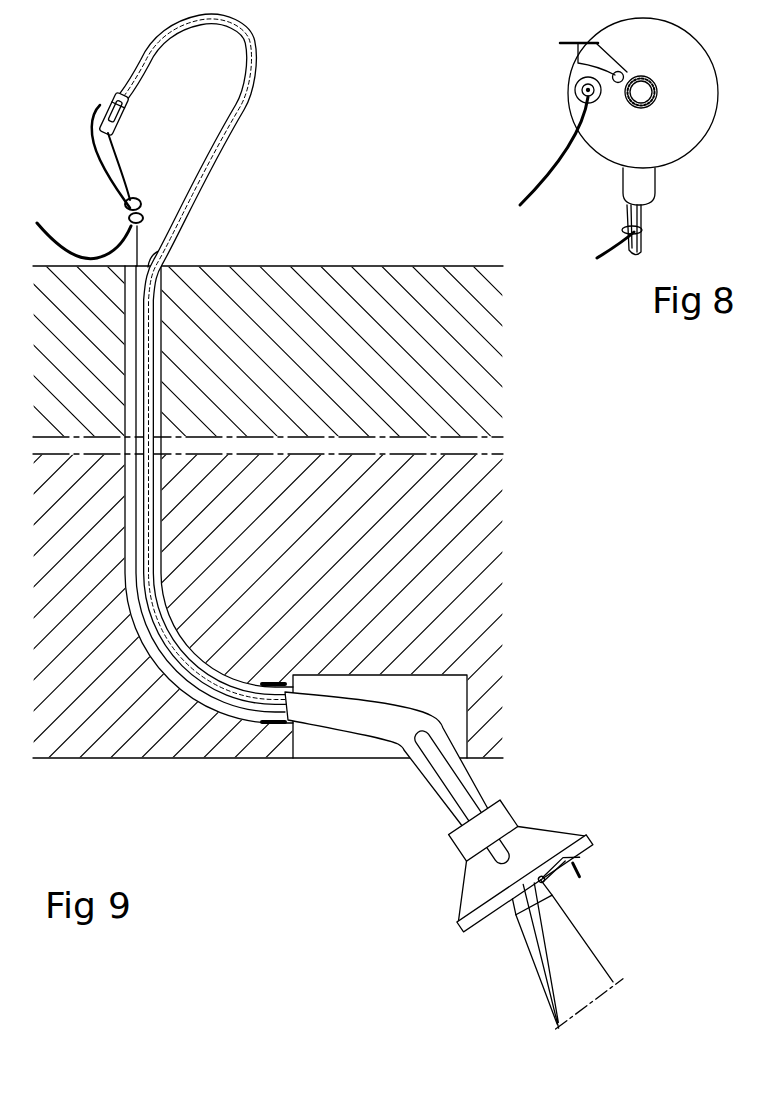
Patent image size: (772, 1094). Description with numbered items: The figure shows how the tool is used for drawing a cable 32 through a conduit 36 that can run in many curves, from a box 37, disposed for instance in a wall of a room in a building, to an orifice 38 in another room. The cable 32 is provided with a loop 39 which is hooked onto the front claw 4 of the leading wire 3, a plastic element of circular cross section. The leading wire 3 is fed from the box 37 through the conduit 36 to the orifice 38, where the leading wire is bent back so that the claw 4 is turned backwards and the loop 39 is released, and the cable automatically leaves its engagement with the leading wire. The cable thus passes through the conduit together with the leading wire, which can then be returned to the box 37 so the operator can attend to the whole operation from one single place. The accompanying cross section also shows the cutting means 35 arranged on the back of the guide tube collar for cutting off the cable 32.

In FIG. 9, the leading wire 3 is at (243, 41).
In FIG. 9, the claw 4 is at (112, 100).
In FIG. 9, the cable 32 is at (227, 717).
In FIG. 8, the cutting means 35 is at (603, 59).
In FIG. 9, the conduit 36 is at (157, 510).
In FIG. 9, the box 37 is at (308, 742).
In FIG. 9, the orifice 38 is at (163, 250).
In FIG. 9, the loop 39 is at (103, 170).